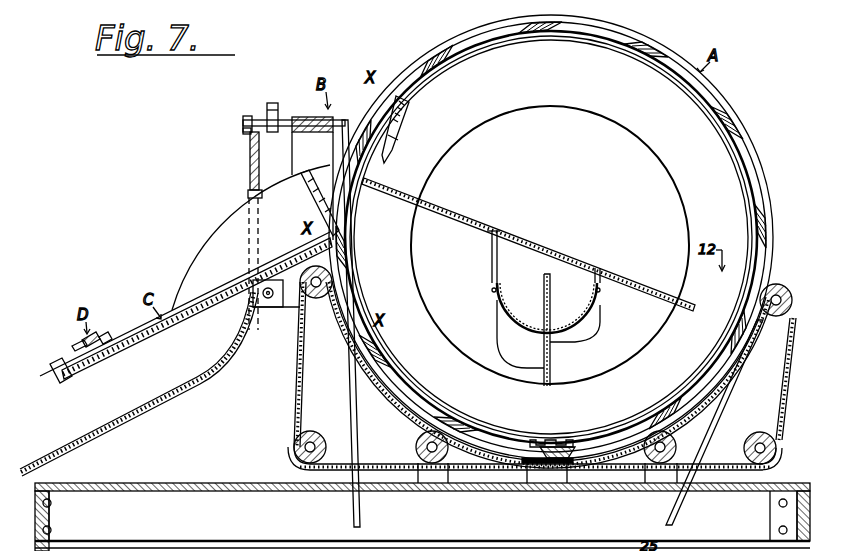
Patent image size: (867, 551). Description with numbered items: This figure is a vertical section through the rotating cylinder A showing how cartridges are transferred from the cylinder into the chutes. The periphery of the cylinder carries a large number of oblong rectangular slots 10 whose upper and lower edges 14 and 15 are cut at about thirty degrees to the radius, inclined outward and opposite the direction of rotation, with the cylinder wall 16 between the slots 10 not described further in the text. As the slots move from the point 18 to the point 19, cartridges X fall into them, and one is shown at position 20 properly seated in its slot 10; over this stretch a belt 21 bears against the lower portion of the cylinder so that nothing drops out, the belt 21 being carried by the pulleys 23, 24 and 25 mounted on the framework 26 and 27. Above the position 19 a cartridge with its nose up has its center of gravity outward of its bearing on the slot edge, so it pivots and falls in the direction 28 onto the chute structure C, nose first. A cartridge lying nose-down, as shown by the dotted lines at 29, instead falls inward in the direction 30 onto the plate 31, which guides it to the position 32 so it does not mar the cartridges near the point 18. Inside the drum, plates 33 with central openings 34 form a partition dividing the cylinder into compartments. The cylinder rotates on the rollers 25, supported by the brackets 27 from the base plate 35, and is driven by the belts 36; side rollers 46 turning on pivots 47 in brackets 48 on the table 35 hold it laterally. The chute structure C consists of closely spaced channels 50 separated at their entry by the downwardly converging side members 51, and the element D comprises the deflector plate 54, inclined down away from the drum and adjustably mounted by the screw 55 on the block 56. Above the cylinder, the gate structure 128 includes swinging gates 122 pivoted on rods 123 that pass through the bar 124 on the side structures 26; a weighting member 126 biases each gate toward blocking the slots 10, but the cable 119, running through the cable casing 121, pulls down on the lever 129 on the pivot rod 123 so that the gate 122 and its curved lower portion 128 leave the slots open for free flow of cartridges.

The slot 10 is at (588, 30).
The upper edge of slot 14 is at (418, 74).
The lower edge of slot 15 is at (368, 125).
The drum wall 16 is at (490, 50).
The point 18 is at (543, 325).
The point 19 is at (366, 251).
The position 20 is at (355, 310).
The belt 21 is at (395, 388).
The pulley 23 is at (316, 298).
The pulley 24 is at (310, 431).
The roller 25 is at (417, 450).
The framework 26 is at (296, 389).
The bracket 27 is at (436, 476).
The direction 28 is at (304, 214).
The dotted-line cartridge position 29 is at (368, 198).
The direction 30 is at (405, 113).
The plate 31 is at (462, 218).
The position 32 is at (717, 300).
The plate 33 is at (550, 241).
The central opening 34 is at (555, 106).
The base plate 35 is at (490, 490).
The belt 36 is at (716, 99).
The side roller 46 is at (520, 450).
The pivot 47 is at (556, 440).
The bracket 48 is at (548, 483).
The channel 50 is at (186, 307).
The side member 51 is at (217, 241).
The deflector plate 54 is at (93, 335).
The screw 55 is at (75, 344).
The block 56 is at (108, 336).
The cable 119 is at (262, 140).
The cable casing 121 is at (130, 420).
The swinging gate 122 is at (345, 118).
The pivot rod 123 is at (250, 120).
The bar 124 is at (298, 116).
The weighting member 126 is at (272, 103).
The curved lower portion of gate 128 is at (318, 195).
The lever 129 is at (246, 134).